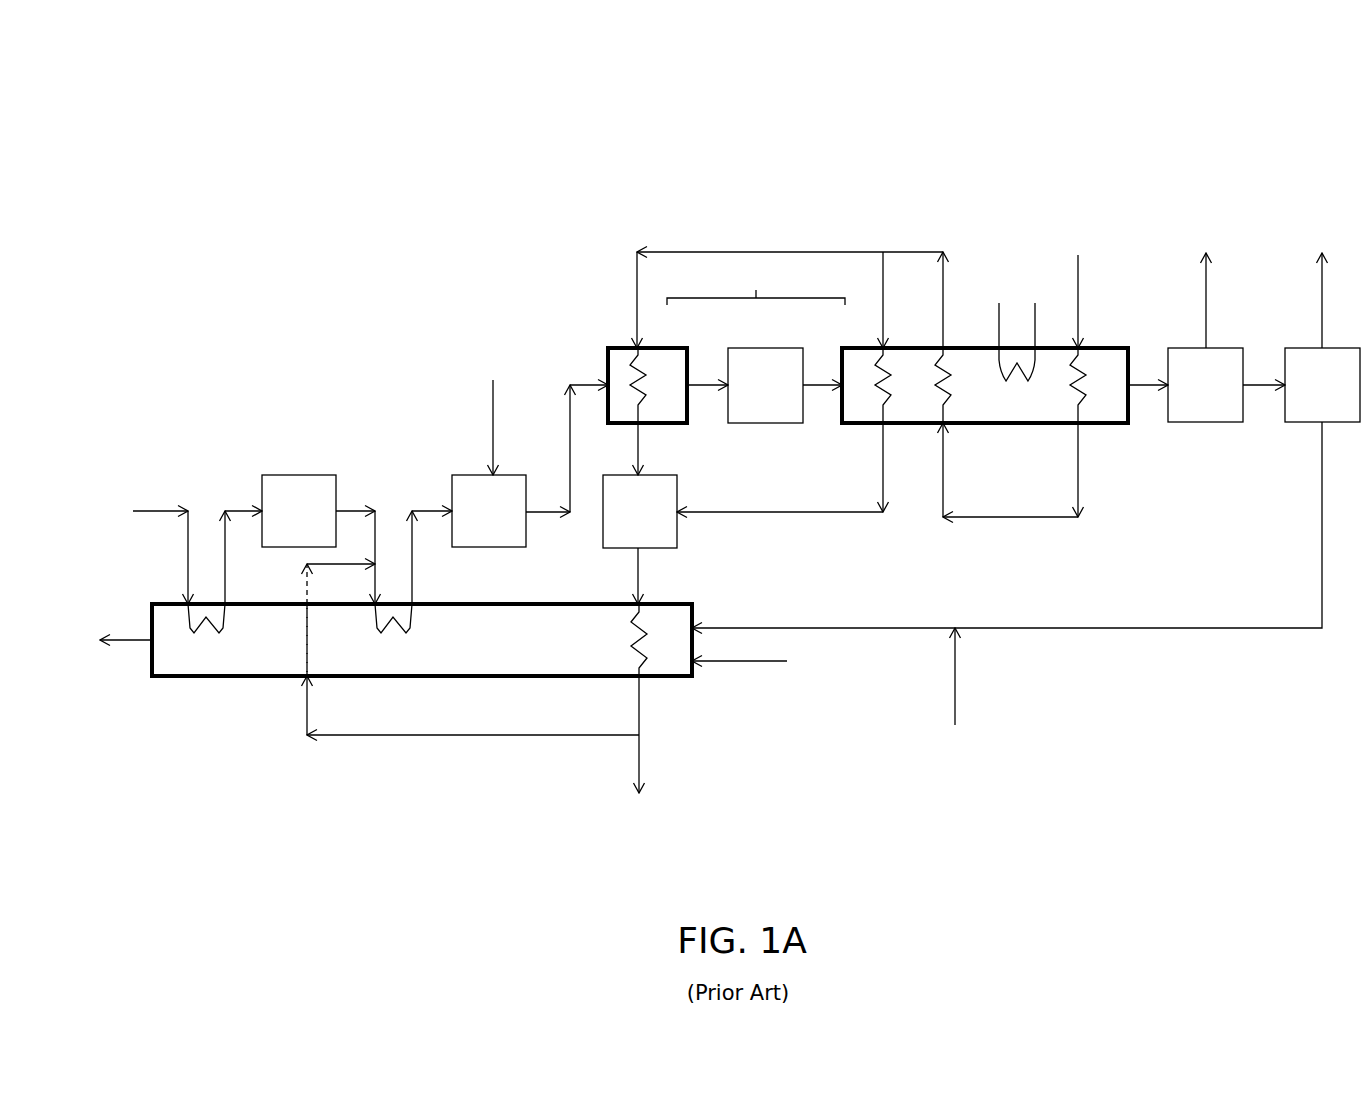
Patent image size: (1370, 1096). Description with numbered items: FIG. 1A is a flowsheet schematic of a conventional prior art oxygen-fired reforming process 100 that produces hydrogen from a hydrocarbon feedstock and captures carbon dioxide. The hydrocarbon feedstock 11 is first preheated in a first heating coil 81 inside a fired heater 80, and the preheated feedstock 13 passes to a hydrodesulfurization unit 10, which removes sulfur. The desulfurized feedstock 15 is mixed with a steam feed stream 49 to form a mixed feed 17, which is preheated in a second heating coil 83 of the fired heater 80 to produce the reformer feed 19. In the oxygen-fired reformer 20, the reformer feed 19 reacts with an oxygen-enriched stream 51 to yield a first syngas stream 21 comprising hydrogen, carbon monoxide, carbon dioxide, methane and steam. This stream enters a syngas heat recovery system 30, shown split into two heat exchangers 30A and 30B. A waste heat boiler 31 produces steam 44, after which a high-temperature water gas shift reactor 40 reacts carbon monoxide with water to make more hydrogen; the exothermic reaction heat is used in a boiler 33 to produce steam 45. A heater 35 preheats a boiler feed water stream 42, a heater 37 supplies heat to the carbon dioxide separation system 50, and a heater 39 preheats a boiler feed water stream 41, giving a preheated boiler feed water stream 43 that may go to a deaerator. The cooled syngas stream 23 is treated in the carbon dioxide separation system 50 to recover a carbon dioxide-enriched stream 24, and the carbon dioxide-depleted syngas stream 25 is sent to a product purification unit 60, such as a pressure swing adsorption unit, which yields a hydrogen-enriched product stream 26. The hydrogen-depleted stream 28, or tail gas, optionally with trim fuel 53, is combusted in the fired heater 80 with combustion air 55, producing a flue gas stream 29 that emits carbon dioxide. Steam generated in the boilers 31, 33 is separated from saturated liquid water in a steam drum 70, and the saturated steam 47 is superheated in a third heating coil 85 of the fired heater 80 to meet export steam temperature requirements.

The oxygen-fired reforming process 100 is at (205, 118).
The hydrodesulfurization unit 10 is at (285, 522).
The oxygen-fired reformer 20 is at (475, 522).
The syngas heat recovery system 30 is at (756, 286).
The heat exchanger 30A is at (682, 348).
The heat exchanger 30B is at (842, 348).
The waste heat boiler 31 is at (651, 397).
The boiler 33 is at (898, 397).
The heater 35 is at (958, 397).
The heater 37 is at (1007, 412).
The heater 39 is at (1090, 397).
The high-temperature water gas shift reactor 40 is at (751, 397).
The carbon dioxide separation system 50 is at (1191, 397).
The product purification unit 60 is at (1308, 397).
The steam drum 70 is at (626, 522).
The fired heater 80 is at (695, 604).
The first heating coil 81 is at (191, 666).
The second heating coil 83 is at (381, 666).
The third heating coil 85 is at (586, 654).
The hydrocarbon feedstock 11 is at (158, 511).
The preheated feedstock 13 is at (225, 592).
The desulfurized feedstock 15 is at (350, 511).
The mixed feed 17 is at (372, 578).
The reformer feed 19 is at (414, 592).
The first syngas stream 21 is at (567, 418).
The cooled syngas stream 23 is at (1150, 395).
The carbon dioxide-enriched stream 24 is at (1208, 305).
The carbon dioxide-depleted syngas stream 25 is at (1265, 395).
The hydrogen-enriched product stream 26 is at (1325, 302).
The hydrogen-depleted stream 28 is at (1212, 634).
The flue gas stream 29 is at (125, 646).
The boiler feed water stream 41 is at (1080, 285).
The boiler feed water stream 42 is at (1012, 520).
The preheated boiler feed water stream 43 is at (946, 292).
The steam 44 is at (640, 440).
The steam 45 is at (812, 520).
The saturated steam 47 is at (636, 585).
The steam feed stream 49 is at (358, 738).
The oxygen-enriched stream 51 is at (490, 420).
The trim fuel 53 is at (958, 672).
The combustion air 55 is at (737, 665).